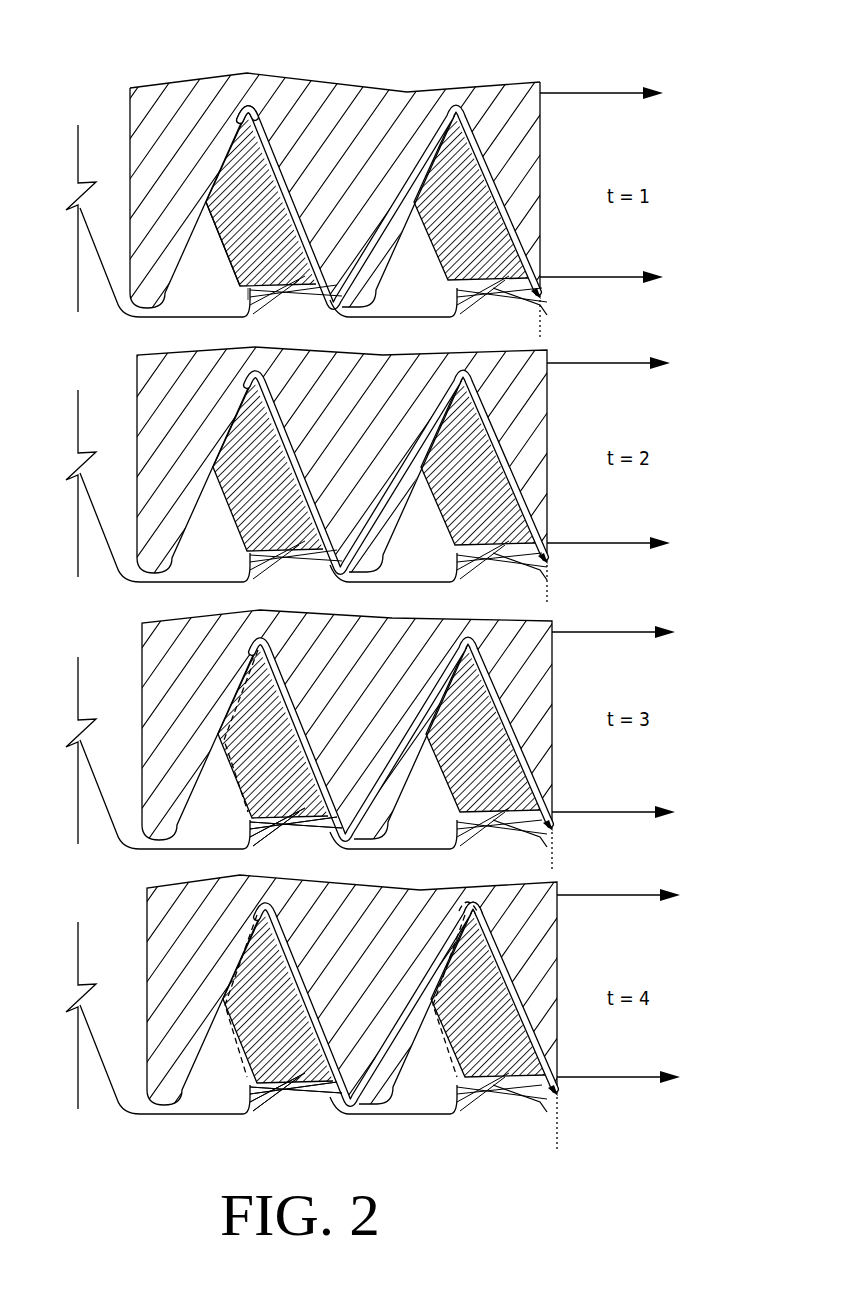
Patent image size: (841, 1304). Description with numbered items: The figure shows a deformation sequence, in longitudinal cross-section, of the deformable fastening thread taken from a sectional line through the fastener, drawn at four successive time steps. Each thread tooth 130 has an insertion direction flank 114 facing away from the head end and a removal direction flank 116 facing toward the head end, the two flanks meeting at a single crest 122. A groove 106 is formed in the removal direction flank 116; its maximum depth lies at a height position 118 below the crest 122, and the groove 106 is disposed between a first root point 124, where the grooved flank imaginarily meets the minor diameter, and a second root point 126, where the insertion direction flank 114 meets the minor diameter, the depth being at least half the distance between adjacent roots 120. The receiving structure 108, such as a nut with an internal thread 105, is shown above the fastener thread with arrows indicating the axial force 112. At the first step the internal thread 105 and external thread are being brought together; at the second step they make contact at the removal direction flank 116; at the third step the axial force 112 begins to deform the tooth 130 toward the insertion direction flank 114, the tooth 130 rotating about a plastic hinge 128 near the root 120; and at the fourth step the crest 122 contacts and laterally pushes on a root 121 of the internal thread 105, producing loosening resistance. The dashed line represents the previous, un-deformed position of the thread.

The internal thread 105 is at (413, 215).
The groove 106 is at (200, 238).
The receiving structure 108 is at (167, 69).
The axial force 112 is at (585, 102).
The insertion direction flank 114 is at (272, 156).
The removal direction flank 116 is at (228, 133).
The height position 118 is at (238, 298).
The root 120 is at (188, 302).
The root of the internal thread 121 is at (467, 897).
The crest 122 is at (248, 104).
The first root point 124 is at (142, 320).
The second root point 126 is at (337, 315).
The plastic hinge 128 is at (280, 828).
The tooth 130 is at (447, 155).